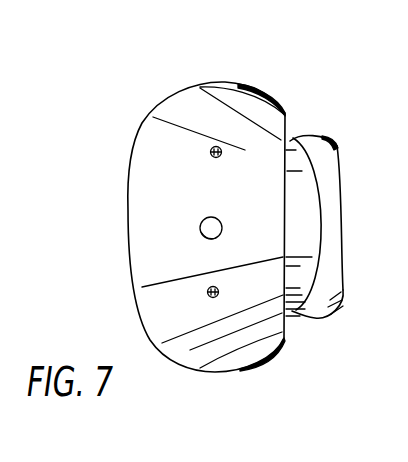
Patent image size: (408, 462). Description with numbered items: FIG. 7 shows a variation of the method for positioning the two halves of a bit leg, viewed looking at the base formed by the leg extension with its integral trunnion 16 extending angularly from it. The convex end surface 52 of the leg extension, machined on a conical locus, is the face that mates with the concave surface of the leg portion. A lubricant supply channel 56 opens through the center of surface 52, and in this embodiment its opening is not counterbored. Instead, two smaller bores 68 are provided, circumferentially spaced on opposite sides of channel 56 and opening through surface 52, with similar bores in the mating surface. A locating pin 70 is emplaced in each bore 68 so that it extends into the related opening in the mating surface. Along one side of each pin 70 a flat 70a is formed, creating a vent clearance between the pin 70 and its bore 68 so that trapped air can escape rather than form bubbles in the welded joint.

The trunnion 16 is at (322, 150).
The end surface 52 is at (140, 189).
The lubricant supply channel 56 is at (200, 230).
The bore 68 is at (222, 150).
The locating pin 70 is at (216, 147).
The flat 70a is at (210, 148).